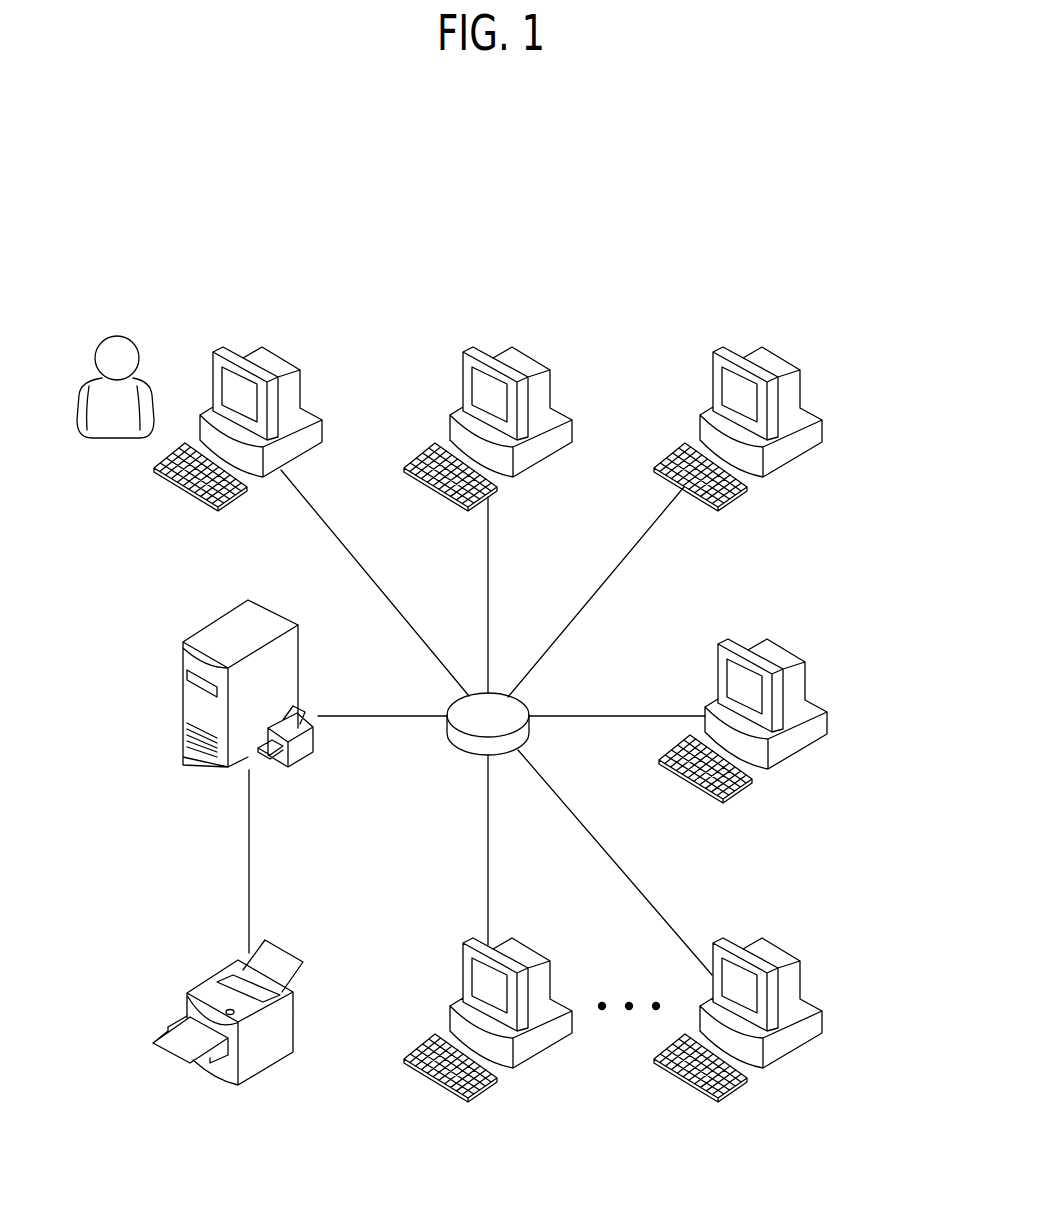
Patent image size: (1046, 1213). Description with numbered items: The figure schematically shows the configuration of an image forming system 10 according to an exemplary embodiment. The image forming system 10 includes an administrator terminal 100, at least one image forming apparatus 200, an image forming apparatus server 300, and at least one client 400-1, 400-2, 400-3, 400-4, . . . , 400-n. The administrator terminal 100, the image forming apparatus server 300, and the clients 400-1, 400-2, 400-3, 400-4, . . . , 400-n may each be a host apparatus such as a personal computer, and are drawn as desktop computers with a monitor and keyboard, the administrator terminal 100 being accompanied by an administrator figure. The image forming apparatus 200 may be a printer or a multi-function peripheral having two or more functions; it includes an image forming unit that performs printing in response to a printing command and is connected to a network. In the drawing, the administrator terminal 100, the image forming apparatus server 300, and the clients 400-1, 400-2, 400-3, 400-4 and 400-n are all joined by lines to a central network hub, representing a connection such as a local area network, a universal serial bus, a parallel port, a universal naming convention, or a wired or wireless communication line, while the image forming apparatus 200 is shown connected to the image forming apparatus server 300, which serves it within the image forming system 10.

The image forming system 10 is at (726, 202).
The administrator terminal 100 is at (253, 347).
The image forming apparatus 200 is at (250, 1082).
The image forming apparatus server 300 is at (182, 690).
The client 400-1 is at (503, 347).
The client 400-2 is at (753, 347).
The client 400-3 is at (806, 689).
The client 400-4 is at (768, 1070).
The client 400-n is at (517, 1073).